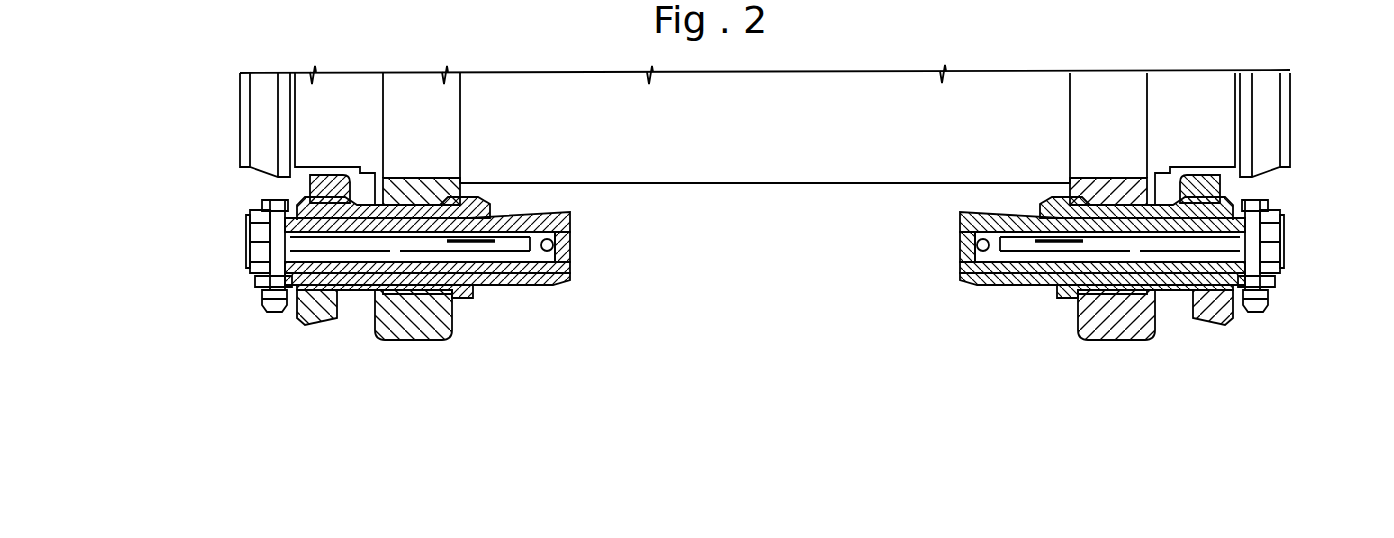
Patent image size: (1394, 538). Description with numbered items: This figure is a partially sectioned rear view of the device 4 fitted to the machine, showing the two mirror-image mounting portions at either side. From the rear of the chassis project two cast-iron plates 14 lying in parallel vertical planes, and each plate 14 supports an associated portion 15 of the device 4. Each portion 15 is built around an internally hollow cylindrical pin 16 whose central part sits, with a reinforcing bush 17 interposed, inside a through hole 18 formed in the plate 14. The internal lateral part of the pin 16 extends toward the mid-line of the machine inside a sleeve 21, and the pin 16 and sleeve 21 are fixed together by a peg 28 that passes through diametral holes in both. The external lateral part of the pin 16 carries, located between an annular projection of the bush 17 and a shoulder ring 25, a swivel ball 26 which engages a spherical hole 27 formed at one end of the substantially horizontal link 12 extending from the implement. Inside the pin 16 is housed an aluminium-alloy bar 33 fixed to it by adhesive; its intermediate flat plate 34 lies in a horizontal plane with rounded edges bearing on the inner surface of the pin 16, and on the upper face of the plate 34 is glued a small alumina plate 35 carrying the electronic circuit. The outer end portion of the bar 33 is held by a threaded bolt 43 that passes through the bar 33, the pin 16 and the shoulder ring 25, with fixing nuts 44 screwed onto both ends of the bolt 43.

The device 4 is at (757, 244).
The horizontal link 12 is at (300, 320).
The plate 14 is at (435, 325).
The portion 15 is at (751, 221).
The cylindrical pin 16 is at (513, 272).
The reinforcing bush 17 is at (410, 288).
The through hole 18 is at (443, 205).
The sleeve 21 is at (556, 281).
The shoulder ring 25 is at (205, 285).
The swivel ball 26 is at (348, 292).
The spherical hole 27 is at (302, 196).
The peg 28 is at (553, 244).
The bar 33 is at (246, 241).
The flat plate 34 is at (506, 235).
The flat small plate 35 is at (480, 242).
The threaded bolt 43 is at (267, 233).
The fixing nuts 44 is at (262, 203).